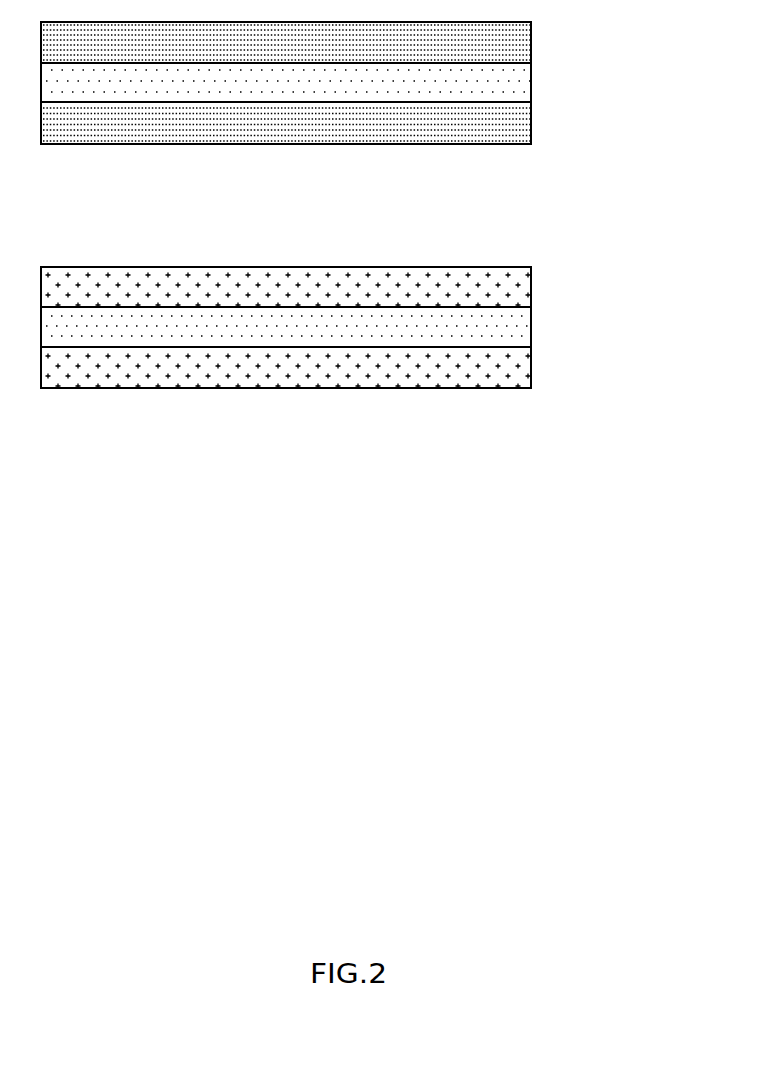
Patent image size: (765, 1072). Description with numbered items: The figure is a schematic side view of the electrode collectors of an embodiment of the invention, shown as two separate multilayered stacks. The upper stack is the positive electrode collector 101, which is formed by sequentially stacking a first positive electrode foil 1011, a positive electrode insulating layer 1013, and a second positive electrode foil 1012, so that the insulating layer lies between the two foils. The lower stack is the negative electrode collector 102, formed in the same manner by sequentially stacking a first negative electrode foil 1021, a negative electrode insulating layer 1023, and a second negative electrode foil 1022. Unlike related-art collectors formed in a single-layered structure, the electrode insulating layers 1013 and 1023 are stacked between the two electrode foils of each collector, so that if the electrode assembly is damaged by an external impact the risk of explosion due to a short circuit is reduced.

The positive electrode collector 101 is at (372, 83).
The first positive electrode foil 1011 is at (531, 40).
The positive electrode insulating layer 1013 is at (531, 80).
The second positive electrode foil 1012 is at (531, 120).
The negative electrode collector 102 is at (372, 328).
The first negative electrode foil 1021 is at (531, 283).
The negative electrode insulating layer 1023 is at (531, 325).
The second negative electrode foil 1022 is at (531, 365).